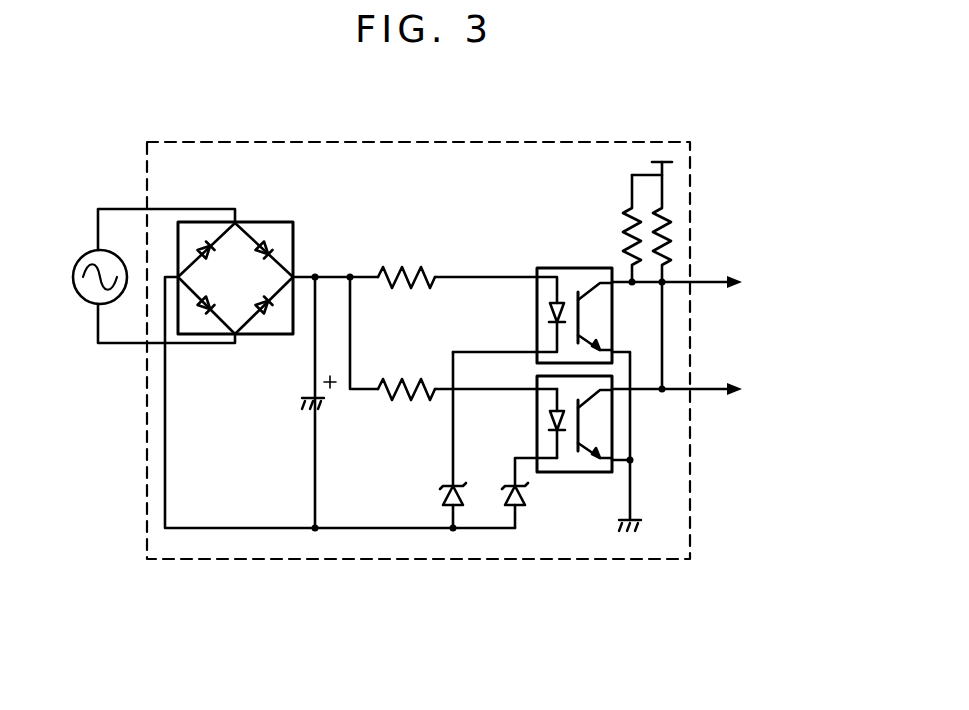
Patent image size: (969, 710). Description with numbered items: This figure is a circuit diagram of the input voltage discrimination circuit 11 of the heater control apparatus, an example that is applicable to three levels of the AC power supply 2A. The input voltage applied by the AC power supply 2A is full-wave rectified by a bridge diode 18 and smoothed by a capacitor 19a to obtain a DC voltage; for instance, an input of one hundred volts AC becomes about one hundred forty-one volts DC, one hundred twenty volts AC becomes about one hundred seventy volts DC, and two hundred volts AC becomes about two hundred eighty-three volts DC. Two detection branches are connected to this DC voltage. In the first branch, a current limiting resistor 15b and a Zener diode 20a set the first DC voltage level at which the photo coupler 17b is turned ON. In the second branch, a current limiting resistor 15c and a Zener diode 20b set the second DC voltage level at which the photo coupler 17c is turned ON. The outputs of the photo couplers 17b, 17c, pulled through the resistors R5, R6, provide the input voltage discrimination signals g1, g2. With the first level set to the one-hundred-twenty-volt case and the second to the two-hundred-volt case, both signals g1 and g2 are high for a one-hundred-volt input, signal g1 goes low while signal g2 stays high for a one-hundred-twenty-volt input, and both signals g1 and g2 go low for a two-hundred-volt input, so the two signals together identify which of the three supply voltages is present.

The AC power supply 2A is at (81, 258).
The input voltage discrimination circuit 11 is at (690, 472).
The current limiting resistor 15b is at (390, 266).
The current limiting resistor 15c is at (403, 400).
The photo coupler 17b is at (569, 268).
The photo coupler 17c is at (566, 472).
The bridge diode 18 is at (275, 335).
The capacitor 19a is at (300, 398).
The Zener diode 20a is at (463, 492).
The Zener diode 20b is at (525, 492).
The resistor R5 is at (628, 208).
The resistor R6 is at (672, 225).
The input voltage discrimination signal g1 is at (710, 282).
The input voltage discrimination signal g2 is at (710, 389).